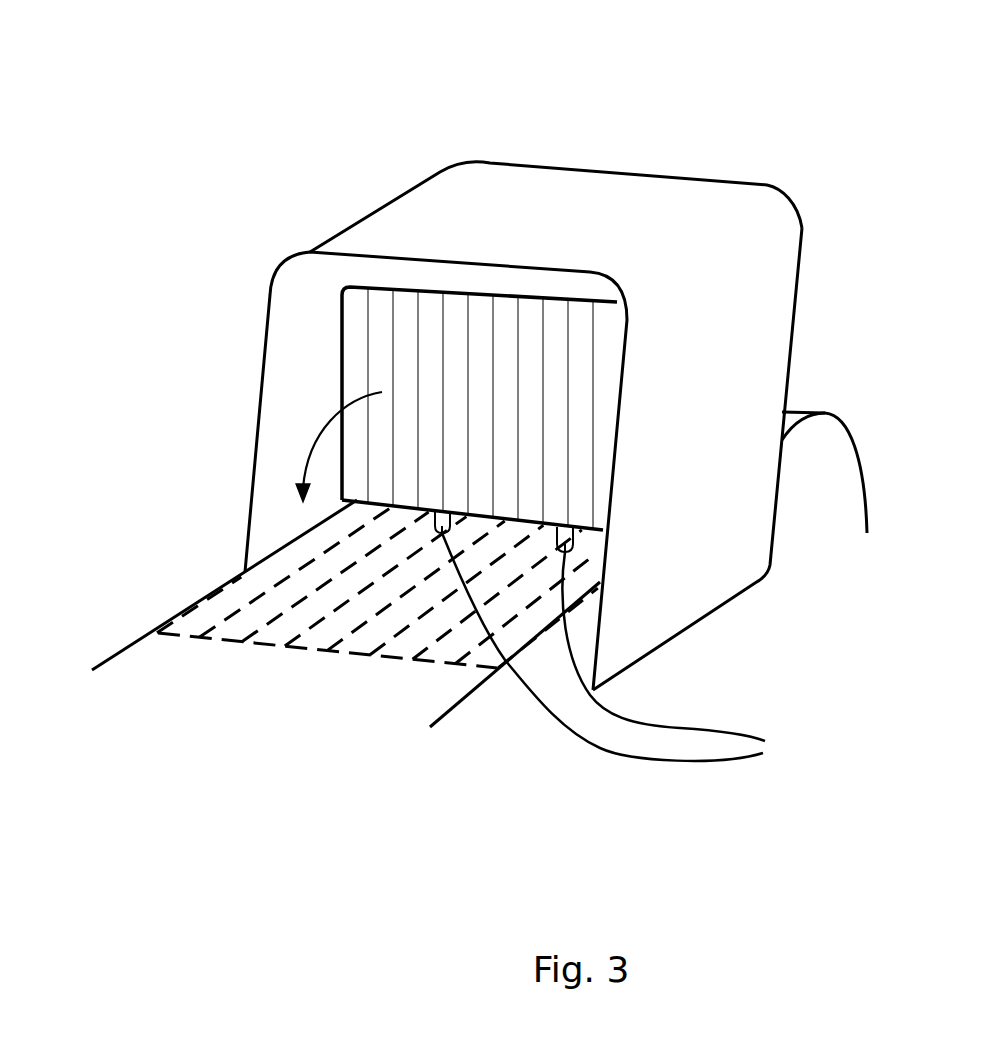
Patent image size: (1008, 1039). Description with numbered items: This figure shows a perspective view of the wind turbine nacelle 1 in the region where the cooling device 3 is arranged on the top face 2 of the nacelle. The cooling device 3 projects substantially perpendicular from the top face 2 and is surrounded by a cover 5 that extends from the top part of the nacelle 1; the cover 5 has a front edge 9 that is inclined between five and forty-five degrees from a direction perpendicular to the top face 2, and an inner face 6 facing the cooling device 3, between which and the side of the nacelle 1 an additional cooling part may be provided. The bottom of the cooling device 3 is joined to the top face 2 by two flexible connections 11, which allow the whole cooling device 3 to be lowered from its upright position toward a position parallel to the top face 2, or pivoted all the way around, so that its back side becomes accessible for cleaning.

The wind turbine nacelle 1 is at (286, 141).
The top face 2 is at (138, 667).
The cooling device 3 is at (384, 363).
The cover 5 is at (568, 208).
The inner face 6 is at (290, 417).
The front edge 9 is at (260, 313).
The flexible connections 11 is at (628, 640).